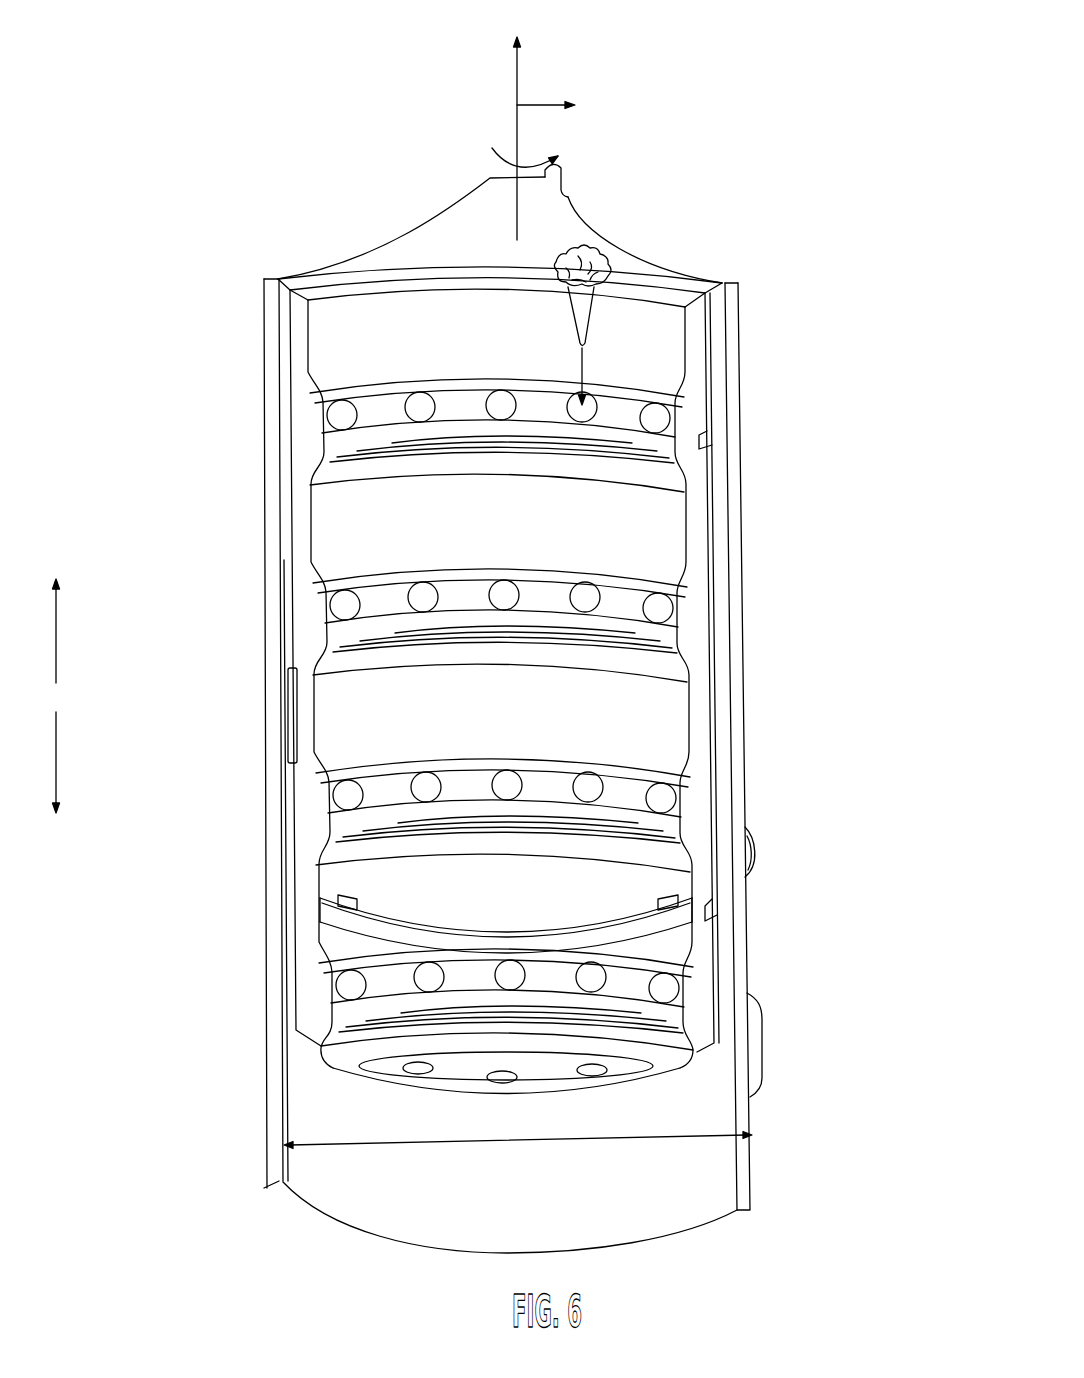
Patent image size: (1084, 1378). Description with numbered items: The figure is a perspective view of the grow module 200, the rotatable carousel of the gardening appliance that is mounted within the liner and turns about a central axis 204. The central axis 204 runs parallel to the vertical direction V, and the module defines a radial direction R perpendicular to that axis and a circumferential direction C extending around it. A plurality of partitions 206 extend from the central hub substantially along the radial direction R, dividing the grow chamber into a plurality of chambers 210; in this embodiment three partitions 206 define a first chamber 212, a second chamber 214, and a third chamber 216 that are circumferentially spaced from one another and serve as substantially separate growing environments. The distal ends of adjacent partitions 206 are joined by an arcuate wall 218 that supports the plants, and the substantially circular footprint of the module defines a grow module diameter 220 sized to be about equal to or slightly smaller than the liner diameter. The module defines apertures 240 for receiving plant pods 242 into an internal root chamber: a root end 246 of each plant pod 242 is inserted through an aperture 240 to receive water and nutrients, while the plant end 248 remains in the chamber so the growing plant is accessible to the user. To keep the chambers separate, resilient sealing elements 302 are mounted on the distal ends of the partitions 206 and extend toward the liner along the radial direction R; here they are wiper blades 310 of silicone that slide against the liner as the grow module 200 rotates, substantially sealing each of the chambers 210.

The grow module 200 is at (882, 140).
The central axis 204 is at (515, 82).
The partitions 206 is at (328, 272).
The chambers 210 is at (654, 714).
The first chamber 212 is at (660, 222).
The second chamber 214 is at (397, 228).
The third chamber 216 is at (396, 507).
The arcuate wall 218 is at (662, 540).
The grow module diameter 220 is at (620, 1141).
The apertures 240 is at (327, 426).
The plant pod 242 is at (586, 308).
The root end 246 is at (574, 340).
The plant end 248 is at (550, 270).
The resilient sealing element 302 is at (570, 175).
The wiper blade 310 is at (562, 163).
The radial direction R is at (542, 102).
The circumferential direction C is at (566, 185).
The vertical direction V is at (56, 696).